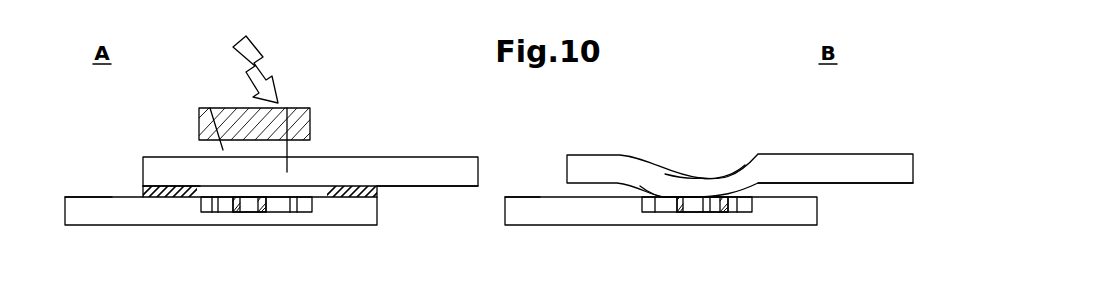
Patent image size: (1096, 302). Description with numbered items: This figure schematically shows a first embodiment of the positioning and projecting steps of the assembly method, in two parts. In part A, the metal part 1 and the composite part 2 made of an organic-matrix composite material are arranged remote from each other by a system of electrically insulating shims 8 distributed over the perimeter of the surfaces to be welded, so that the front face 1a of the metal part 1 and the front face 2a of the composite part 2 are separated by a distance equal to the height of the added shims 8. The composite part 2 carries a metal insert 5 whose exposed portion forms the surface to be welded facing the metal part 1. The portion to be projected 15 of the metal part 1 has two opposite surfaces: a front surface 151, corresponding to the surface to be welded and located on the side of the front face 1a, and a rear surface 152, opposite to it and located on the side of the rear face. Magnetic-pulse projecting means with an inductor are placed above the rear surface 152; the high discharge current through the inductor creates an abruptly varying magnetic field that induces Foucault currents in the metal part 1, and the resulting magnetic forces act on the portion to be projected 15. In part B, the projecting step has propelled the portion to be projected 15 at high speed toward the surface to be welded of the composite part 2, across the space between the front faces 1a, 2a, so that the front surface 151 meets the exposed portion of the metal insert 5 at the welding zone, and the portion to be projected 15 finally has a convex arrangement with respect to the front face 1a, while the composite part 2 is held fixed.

The metal part 1 is at (444, 170).
The front face of the metal part 1a is at (411, 200).
The composite part 2 is at (130, 210).
The front face of the composite part 2a is at (100, 183).
The metal insert 5 is at (232, 212).
The electrically insulating shims 8 is at (132, 190).
The portion to be projected 15 is at (287, 108).
The front surface 151 is at (665, 182).
The rear surface 152 is at (210, 108).